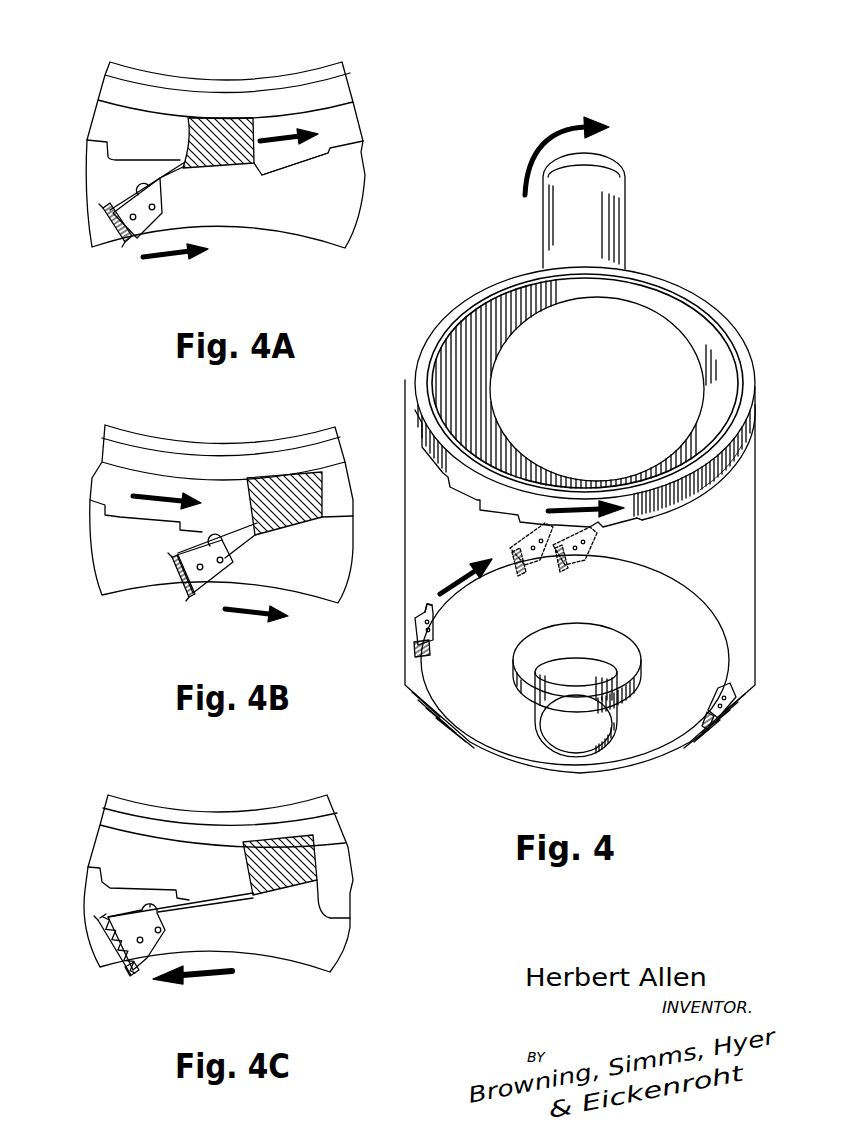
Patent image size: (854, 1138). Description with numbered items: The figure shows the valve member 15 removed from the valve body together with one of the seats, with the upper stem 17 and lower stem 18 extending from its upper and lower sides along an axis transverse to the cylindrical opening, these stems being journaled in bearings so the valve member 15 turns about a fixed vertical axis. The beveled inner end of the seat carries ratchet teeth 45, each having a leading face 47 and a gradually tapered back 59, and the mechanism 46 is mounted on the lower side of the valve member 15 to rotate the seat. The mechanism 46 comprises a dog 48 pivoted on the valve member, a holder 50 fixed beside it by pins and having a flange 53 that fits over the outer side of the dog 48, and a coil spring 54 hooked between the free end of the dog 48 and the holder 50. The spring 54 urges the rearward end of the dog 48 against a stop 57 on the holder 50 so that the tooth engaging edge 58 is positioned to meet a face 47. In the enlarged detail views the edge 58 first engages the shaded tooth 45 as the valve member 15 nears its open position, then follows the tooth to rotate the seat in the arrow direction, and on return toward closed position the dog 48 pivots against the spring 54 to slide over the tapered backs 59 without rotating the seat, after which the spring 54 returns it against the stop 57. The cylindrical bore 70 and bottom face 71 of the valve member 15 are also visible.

In FIG. 4, the valve member 15 is at (405, 423).
In FIG. 4, the upper stem 17 is at (628, 226).
In FIG. 4, the lower stem 18 is at (620, 703).
In FIG. 4A, the ratchet teeth 45 is at (280, 75).
In FIG. 4B, the ratchet teeth 45 is at (105, 478).
In FIG. 4C, the ratchet teeth 45 is at (333, 848).
In FIG. 4, the ratchet teeth 45 is at (695, 303).
In FIG. 4A, the mechanism 46 is at (117, 186).
In FIG. 4B, the mechanism 46 is at (247, 588).
In FIG. 4C, the mechanism 46 is at (167, 935).
In FIG. 4, the mechanism 46 is at (413, 631).
In FIG. 4A, the faces 47 is at (335, 164).
In FIG. 4B, the faces 47 is at (103, 505).
In FIG. 4C, the faces 47 is at (350, 918).
In FIG. 4, the faces 47 is at (640, 520).
In FIG. 4A, the dog 48 is at (133, 182).
In FIG. 4B, the dog 48 is at (202, 532).
In FIG. 4C, the dog 48 is at (137, 910).
In FIG. 4, the dog 48 is at (420, 606).
In FIG. 4A, the holder 50 is at (158, 217).
In FIG. 4B, the holder 50 is at (205, 587).
In FIG. 4A, the flange 53 is at (157, 172).
In FIG. 4C, the flange 53 is at (150, 906).
In FIG. 4B, the coil spring 54 is at (172, 589).
In FIG. 4C, the coil spring 54 is at (110, 952).
In FIG. 4C, the stop 57 is at (103, 923).
In FIG. 4A, the tooth engaging edge 58 is at (190, 118).
In FIG. 4C, the tooth engaging edge 58 is at (196, 902).
In FIG. 4A, the backs 59 is at (292, 170).
In FIG. 4B, the backs 59 is at (138, 517).
In FIG. 4, the backs 59 is at (685, 500).
In FIG. 4, the bore 70 is at (563, 389).
In FIG. 4, the bottom wall 71 is at (668, 656).